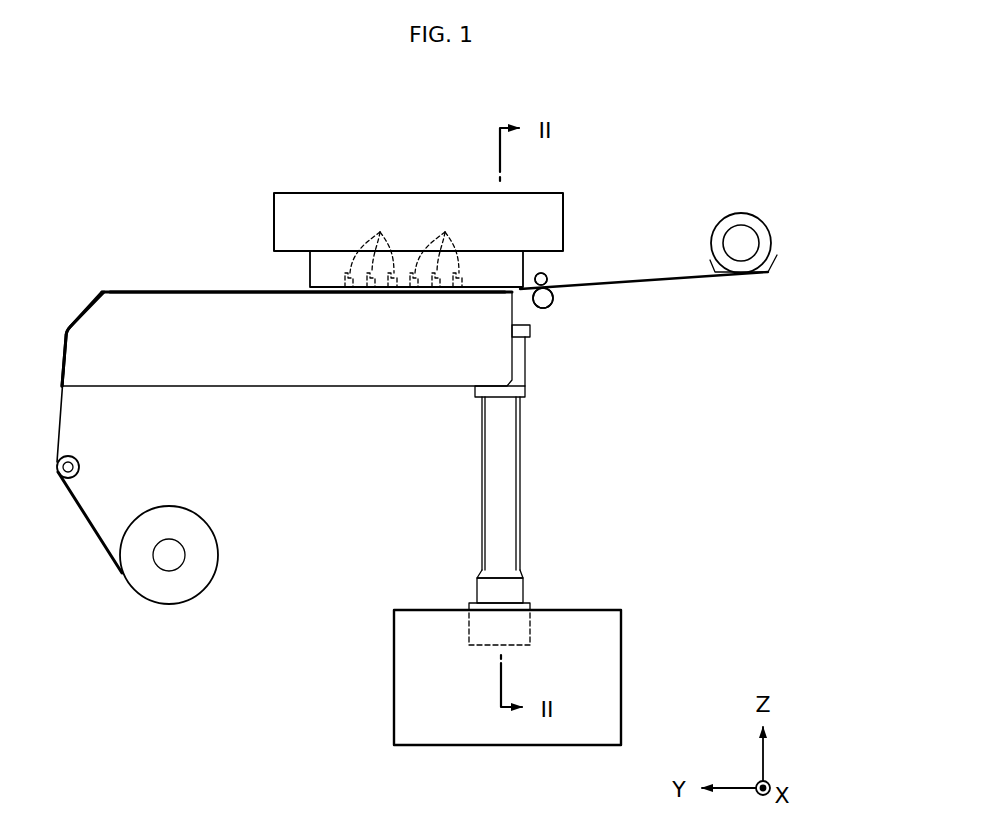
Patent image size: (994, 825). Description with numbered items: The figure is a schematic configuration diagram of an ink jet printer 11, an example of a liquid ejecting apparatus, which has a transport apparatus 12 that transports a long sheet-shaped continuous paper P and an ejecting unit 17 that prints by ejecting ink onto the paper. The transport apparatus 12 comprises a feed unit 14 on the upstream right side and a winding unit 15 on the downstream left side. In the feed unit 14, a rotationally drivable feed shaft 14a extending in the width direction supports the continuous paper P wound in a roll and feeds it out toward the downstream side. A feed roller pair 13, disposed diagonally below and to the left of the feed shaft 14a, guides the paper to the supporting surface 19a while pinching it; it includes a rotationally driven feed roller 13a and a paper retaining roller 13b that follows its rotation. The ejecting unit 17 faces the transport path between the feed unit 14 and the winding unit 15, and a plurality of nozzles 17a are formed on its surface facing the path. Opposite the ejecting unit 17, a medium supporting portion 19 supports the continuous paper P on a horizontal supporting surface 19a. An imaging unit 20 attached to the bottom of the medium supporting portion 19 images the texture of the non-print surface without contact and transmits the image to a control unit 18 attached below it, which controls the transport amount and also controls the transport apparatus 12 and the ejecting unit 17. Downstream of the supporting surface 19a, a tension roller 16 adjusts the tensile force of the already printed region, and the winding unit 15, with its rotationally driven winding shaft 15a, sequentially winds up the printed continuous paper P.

The printer 11 is at (138, 204).
The transport apparatus 12 is at (92, 282).
The feed roller pair 13 is at (622, 288).
The feed roller 13a is at (551, 300).
The paper retaining roller 13b is at (547, 279).
The feed unit 14 is at (785, 237).
The feed shaft 14a is at (740, 253).
The winding unit 15 is at (143, 608).
The winding shaft 15a is at (172, 558).
The tension roller 16 is at (80, 468).
The ejecting unit 17 is at (423, 197).
The nozzles 17a is at (404, 246).
The control unit 18 is at (613, 677).
The medium supporting portion 19 is at (162, 390).
The supporting surface 19a is at (262, 290).
The imaging unit 20 is at (538, 482).
The continuous paper P is at (60, 402).